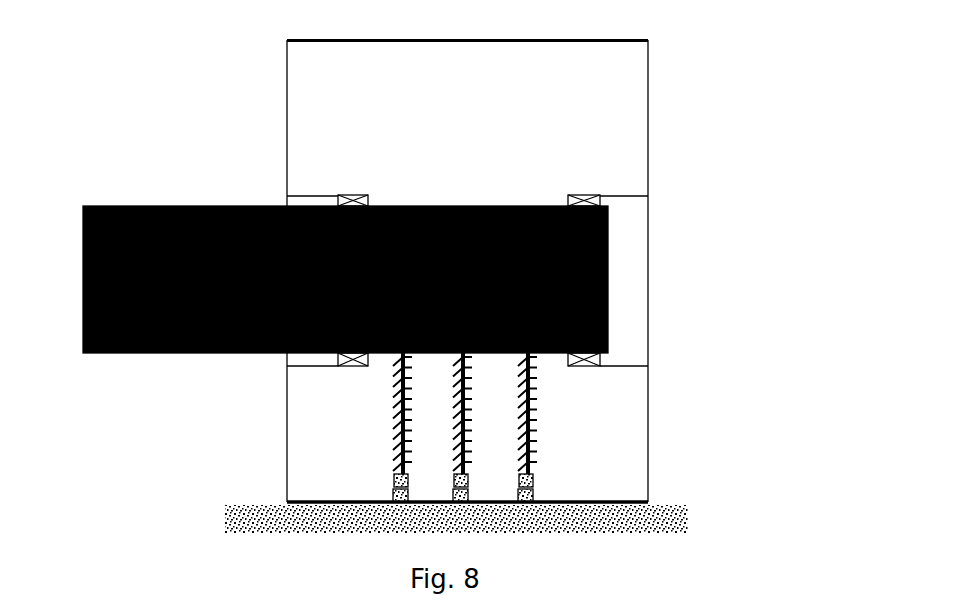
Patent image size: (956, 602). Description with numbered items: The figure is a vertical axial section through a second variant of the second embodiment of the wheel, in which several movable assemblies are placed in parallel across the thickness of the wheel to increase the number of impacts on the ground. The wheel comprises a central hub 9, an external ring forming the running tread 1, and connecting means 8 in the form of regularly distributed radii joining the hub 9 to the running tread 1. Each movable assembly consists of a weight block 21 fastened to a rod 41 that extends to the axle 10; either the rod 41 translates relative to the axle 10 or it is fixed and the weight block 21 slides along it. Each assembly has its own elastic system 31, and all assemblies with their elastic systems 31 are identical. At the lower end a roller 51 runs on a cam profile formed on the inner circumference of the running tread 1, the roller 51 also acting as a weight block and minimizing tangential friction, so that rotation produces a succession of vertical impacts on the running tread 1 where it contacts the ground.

The running tread 1 is at (596, 490).
The connecting means 8 is at (640, 114).
The central hub 9 is at (328, 188).
The axle 10 is at (228, 198).
The weight block 21 is at (342, 486).
The elastic system 31 is at (384, 419).
The rod 41 is at (388, 386).
The roller 51 is at (388, 472).